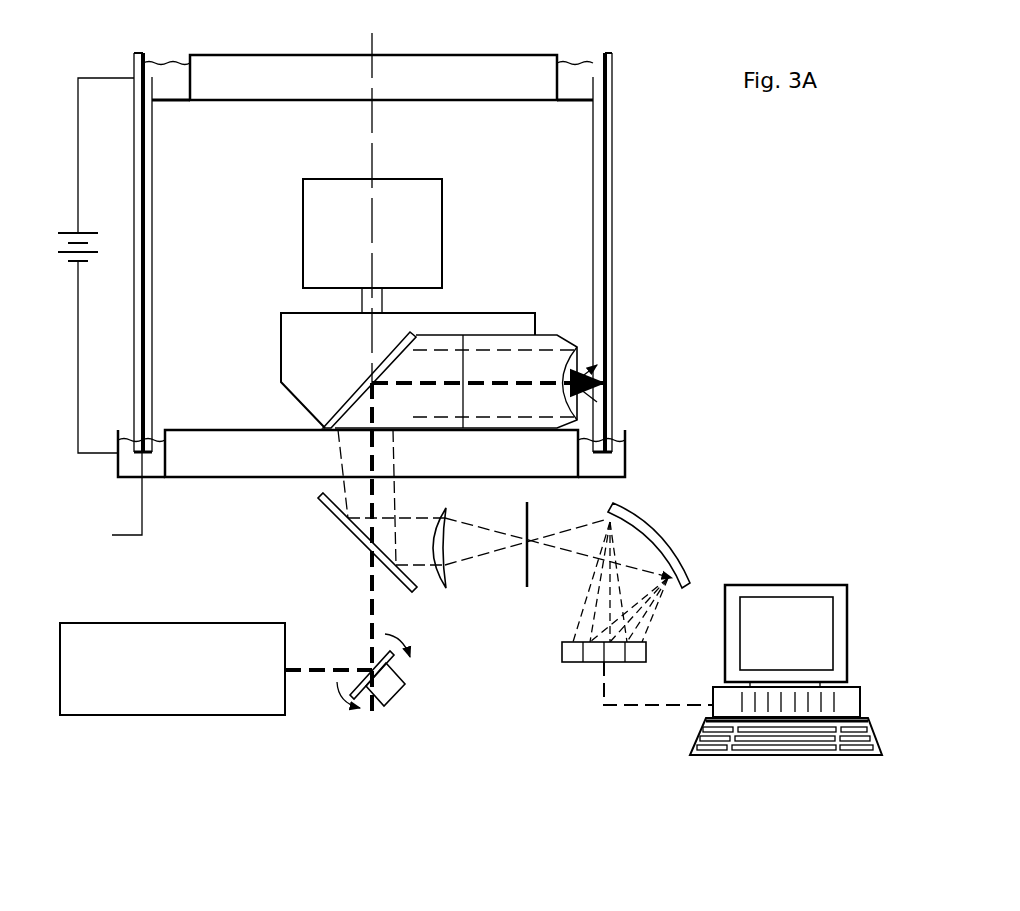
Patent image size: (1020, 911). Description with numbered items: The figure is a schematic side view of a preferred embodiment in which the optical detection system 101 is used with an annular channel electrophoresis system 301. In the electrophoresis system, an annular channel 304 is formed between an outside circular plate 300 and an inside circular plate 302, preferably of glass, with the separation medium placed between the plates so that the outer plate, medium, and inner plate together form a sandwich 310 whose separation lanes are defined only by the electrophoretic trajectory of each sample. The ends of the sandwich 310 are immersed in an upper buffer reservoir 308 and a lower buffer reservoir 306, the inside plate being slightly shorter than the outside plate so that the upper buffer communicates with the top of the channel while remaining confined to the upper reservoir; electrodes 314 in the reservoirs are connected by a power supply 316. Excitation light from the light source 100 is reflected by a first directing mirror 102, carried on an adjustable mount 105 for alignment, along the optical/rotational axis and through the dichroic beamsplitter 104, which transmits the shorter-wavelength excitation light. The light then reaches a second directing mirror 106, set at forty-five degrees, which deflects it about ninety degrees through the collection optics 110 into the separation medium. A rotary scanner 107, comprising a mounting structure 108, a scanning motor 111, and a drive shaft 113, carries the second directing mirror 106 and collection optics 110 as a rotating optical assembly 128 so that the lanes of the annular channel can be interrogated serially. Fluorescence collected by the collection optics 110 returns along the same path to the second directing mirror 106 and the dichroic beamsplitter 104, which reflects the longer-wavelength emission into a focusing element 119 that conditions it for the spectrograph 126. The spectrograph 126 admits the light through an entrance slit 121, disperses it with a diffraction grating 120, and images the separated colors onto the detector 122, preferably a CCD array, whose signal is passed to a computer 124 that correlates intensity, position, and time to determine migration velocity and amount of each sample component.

The light source 100 is at (172, 715).
The optical detection system 101 is at (371, 270).
The first directing mirror 102 is at (393, 659).
The dichroic beamsplitter 104 is at (360, 537).
The adjustable mount 105 is at (378, 700).
The second directing mirror 106 is at (318, 395).
The rotary scanner 107 is at (371, 270).
The mounting structure 108 is at (281, 350).
The collection optics 110 is at (541, 333).
The scanning motor 111 is at (303, 207).
The drive shaft 113 is at (362, 303).
The focusing element 119 is at (444, 514).
The diffraction grating 120 is at (650, 530).
The entrance slit 121 is at (527, 575).
The detector 122 is at (578, 662).
The computer 124 is at (792, 757).
The spectrograph 126 is at (664, 597).
The rotating optical assembly 128 is at (371, 327).
The outside circular plate 300 is at (597, 252).
The annular channel electrophoresis system 301 is at (615, 252).
The inside circular plate 302 is at (593, 241).
The annular channel 304 is at (606, 203).
The lower buffer reservoir 306 is at (615, 462).
The upper buffer reservoir 308 is at (572, 62).
The sandwich 310 is at (635, 350).
The electrodes 314 is at (101, 501).
The power supply 316 is at (95, 77).